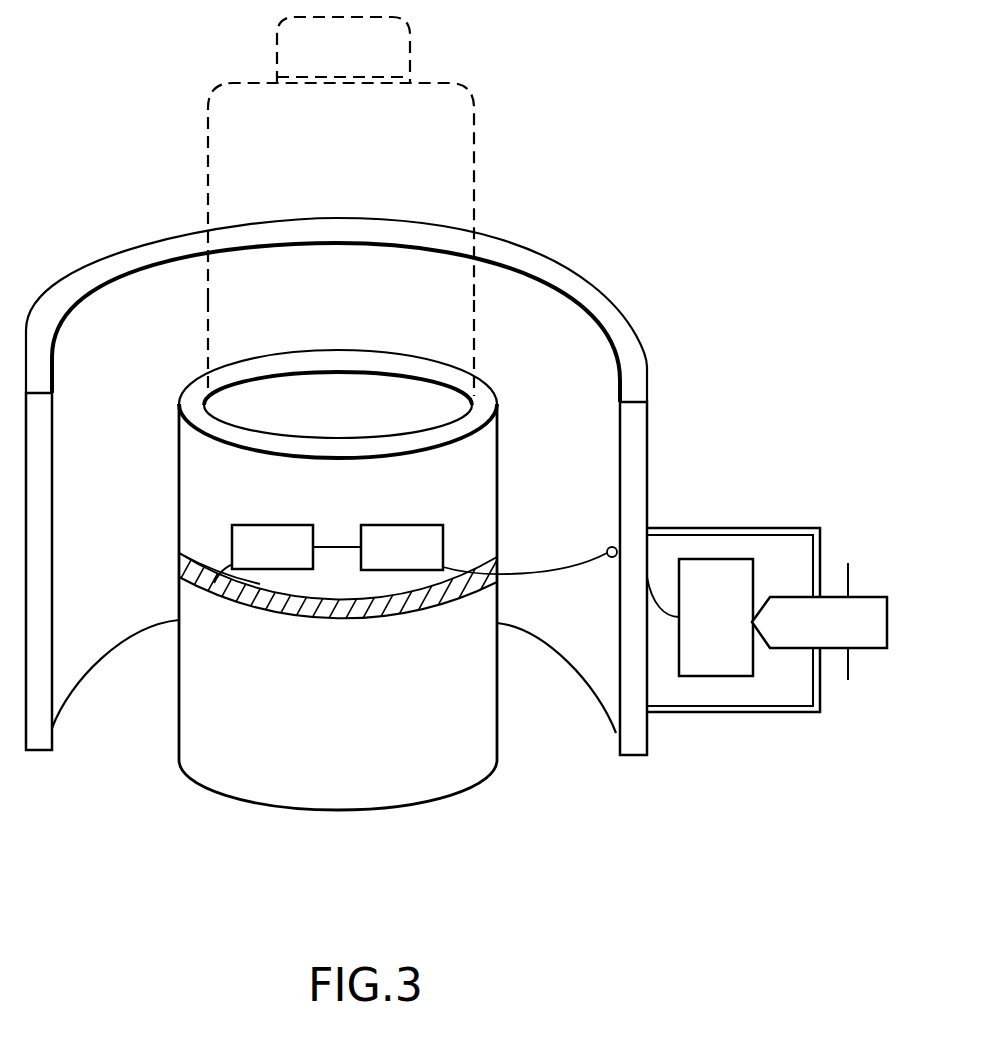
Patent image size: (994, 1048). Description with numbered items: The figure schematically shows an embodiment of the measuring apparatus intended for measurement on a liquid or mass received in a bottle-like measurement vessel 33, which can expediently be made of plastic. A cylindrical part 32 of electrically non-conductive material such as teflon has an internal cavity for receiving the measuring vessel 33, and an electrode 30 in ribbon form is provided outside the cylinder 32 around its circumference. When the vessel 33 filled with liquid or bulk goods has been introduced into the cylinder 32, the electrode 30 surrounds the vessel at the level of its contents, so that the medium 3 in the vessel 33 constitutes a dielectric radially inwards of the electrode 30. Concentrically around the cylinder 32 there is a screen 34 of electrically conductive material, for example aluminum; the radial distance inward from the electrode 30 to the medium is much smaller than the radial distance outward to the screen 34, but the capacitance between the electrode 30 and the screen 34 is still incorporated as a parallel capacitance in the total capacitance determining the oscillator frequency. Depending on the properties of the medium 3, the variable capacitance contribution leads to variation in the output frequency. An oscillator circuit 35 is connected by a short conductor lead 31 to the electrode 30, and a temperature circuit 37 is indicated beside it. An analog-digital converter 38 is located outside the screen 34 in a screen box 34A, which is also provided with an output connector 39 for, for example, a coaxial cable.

The medium 3 is at (452, 340).
The electrode 30 is at (430, 603).
The conductor lead 31 is at (214, 586).
The cylindrical part 32 is at (192, 405).
The measurement vessel 33 is at (473, 192).
The screen 34 is at (560, 279).
The screen box 34A is at (703, 528).
The oscillator circuit 35 is at (290, 524).
The temperature circuit 37 is at (400, 524).
The analog-digital converter 38 is at (716, 677).
The output connector 39 is at (828, 595).